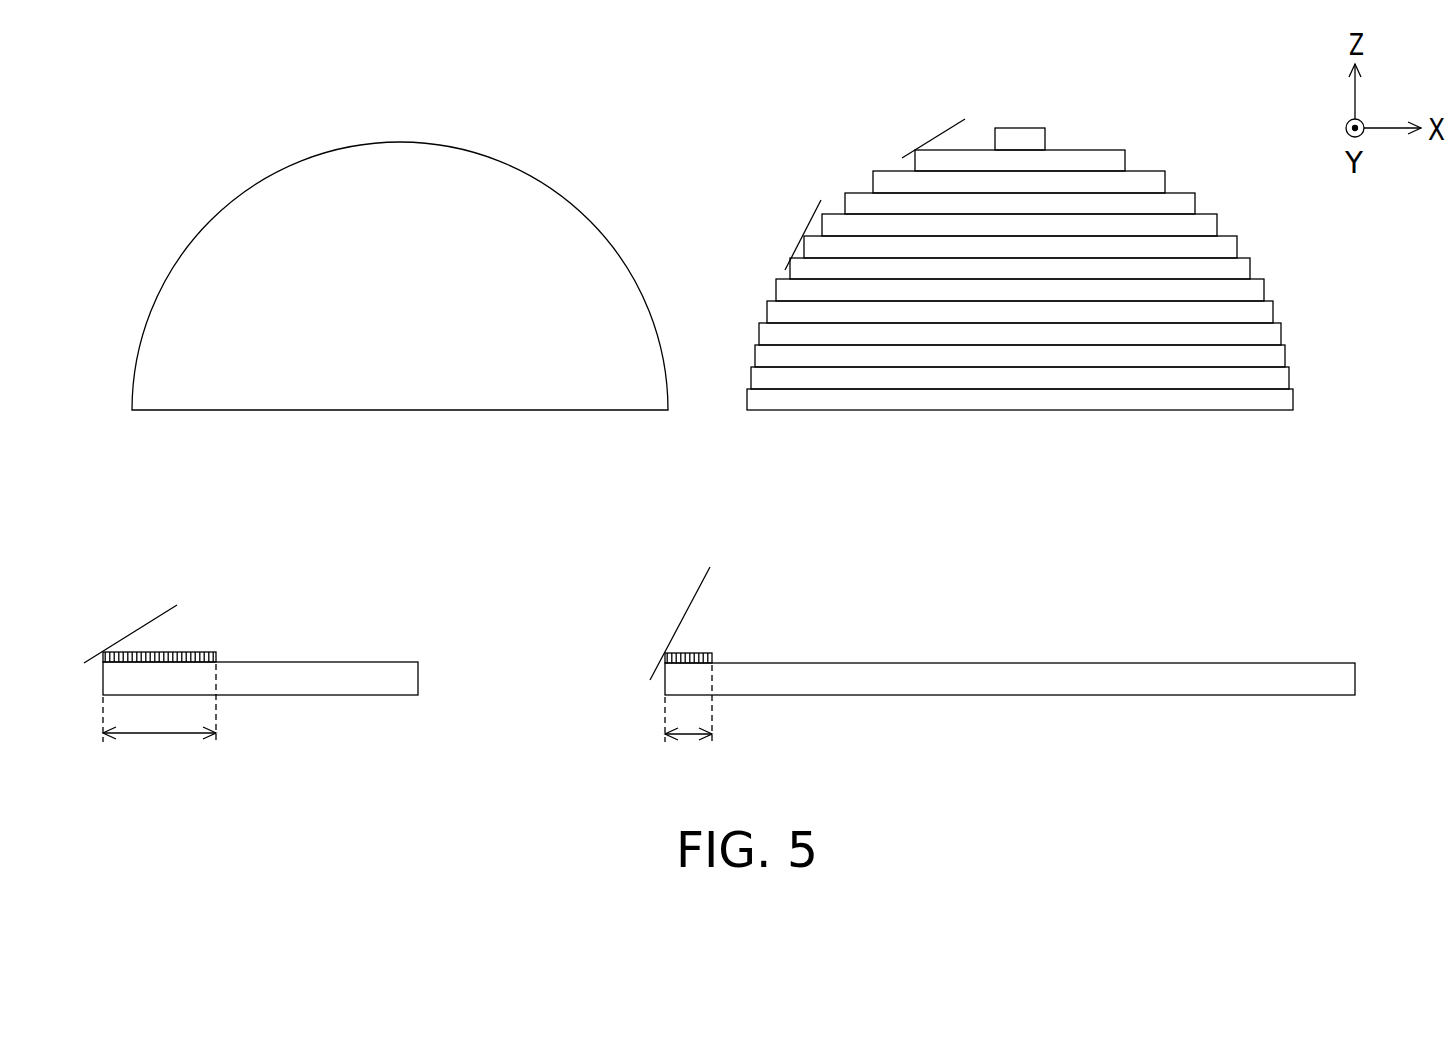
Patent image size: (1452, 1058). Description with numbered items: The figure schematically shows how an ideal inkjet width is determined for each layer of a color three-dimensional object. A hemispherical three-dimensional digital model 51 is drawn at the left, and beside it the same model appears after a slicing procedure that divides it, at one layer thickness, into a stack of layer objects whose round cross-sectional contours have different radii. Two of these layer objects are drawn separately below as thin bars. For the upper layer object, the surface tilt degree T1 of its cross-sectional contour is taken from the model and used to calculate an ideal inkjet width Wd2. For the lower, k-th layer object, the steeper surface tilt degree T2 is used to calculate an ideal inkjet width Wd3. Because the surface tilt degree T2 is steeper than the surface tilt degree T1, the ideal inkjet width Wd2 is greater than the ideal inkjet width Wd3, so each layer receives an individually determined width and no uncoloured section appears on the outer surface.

The three-dimensional digital model 51 is at (223, 130).
The surface tilt degree T1 is at (948, 130).
The surface tilt degree T2 is at (808, 220).
The ideal inkjet width Wd2 is at (159, 720).
The ideal inkjet width Wd3 is at (688, 724).